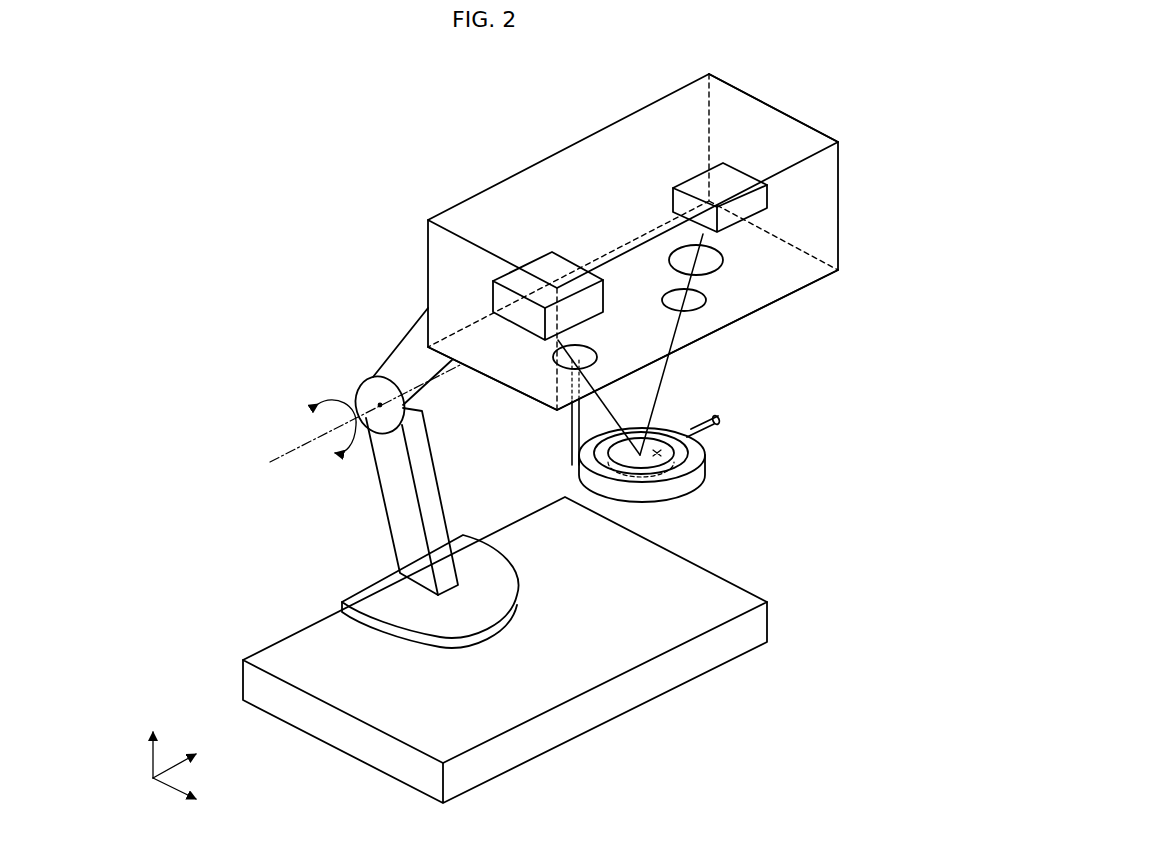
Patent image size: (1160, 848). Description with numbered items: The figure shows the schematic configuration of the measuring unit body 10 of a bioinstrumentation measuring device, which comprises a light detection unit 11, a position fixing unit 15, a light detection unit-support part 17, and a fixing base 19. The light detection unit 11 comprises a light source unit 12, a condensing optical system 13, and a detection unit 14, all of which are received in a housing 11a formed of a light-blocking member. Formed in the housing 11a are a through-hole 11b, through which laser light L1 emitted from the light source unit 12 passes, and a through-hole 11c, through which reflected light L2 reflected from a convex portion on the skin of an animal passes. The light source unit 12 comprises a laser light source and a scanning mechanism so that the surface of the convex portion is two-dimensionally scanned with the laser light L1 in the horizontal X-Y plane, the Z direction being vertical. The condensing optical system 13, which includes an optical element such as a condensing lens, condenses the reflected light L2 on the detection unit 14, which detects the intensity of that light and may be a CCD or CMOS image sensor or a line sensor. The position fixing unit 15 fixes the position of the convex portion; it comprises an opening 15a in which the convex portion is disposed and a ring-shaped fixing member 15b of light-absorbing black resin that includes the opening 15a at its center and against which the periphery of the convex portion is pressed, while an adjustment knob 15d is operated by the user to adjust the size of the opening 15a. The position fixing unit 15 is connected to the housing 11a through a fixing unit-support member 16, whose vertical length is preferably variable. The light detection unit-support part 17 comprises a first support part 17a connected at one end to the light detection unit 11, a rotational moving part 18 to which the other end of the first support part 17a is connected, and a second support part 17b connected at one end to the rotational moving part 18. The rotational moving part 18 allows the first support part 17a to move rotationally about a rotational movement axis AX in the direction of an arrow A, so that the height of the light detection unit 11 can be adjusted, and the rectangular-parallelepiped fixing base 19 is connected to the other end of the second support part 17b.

The measuring unit body 10 is at (350, 166).
The light detection unit 11 is at (551, 117).
The housing 11a is at (618, 137).
The through-hole 11b is at (567, 367).
The through-hole 11c is at (707, 300).
The light source unit 12 is at (545, 267).
The condensing optical system 13 is at (722, 265).
The detection unit 14 is at (753, 200).
The position fixing unit 15 is at (694, 443).
The opening 15a is at (660, 453).
The fixing member 15b is at (668, 430).
The adjustment knob 15d is at (720, 421).
The fixing unit-support member 16 is at (572, 413).
The light detection unit-support part 17 is at (370, 439).
The first support part 17a is at (407, 350).
The second support part 17b is at (400, 523).
The rotational moving part 18 is at (356, 378).
The fixing base 19 is at (312, 640).
The laser light L1 is at (570, 450).
The reflected light L2 is at (703, 237).
The arrow A is at (325, 424).
The rotational movement axis AX is at (350, 422).